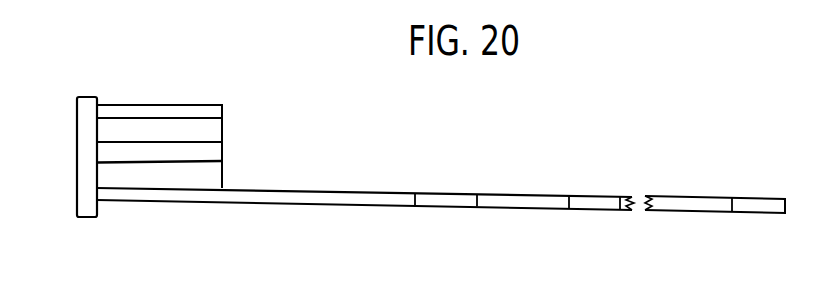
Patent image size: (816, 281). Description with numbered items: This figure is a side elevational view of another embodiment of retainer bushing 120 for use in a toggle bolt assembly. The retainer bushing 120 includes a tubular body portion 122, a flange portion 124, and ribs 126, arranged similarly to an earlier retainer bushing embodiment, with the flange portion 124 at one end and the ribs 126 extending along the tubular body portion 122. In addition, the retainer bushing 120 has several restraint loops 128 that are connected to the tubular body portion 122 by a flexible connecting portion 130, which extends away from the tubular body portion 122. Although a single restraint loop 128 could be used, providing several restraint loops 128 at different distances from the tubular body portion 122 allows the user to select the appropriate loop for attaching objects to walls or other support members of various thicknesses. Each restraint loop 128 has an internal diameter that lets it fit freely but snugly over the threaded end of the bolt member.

The retainer bushing 120 is at (235, 130).
The tubular body portion 122 is at (222, 141).
The flange portion 124 is at (77, 132).
The ribs 126 is at (170, 105).
The restraint loops 128 is at (447, 192).
The flexible connecting portion 130 is at (377, 208).